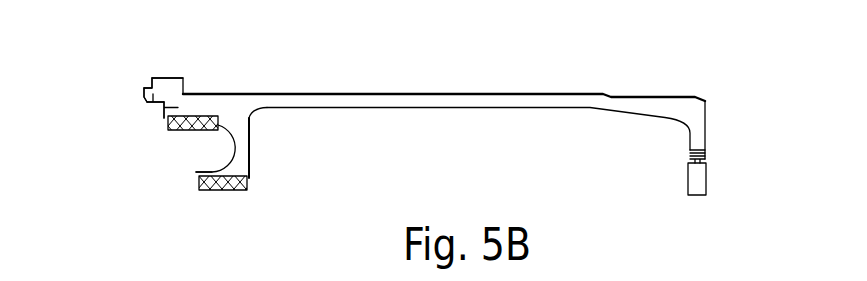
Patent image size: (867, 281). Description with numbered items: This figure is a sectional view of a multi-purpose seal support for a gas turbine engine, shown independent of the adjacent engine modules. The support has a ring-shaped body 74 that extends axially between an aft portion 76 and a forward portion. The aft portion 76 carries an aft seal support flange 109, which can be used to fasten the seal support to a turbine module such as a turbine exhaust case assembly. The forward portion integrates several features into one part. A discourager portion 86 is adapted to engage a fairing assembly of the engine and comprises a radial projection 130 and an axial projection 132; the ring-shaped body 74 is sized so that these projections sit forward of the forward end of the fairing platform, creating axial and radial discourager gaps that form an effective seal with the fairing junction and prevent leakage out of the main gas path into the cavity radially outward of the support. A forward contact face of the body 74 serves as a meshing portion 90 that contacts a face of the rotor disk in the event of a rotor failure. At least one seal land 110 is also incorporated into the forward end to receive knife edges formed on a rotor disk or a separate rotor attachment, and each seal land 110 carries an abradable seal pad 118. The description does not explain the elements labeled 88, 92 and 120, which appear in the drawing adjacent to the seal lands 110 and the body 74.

The ring-shaped body 74 is at (465, 93).
The aft portion 76 is at (740, 86).
The discourager portion 86 is at (201, 83).
The support member 88 is at (262, 120).
The meshing portion 90 is at (134, 77).
The lower lip 92 is at (130, 96).
The aft seal support flange 109 is at (697, 133).
The seal land 110 is at (163, 108).
The abradable seal pad 118 is at (203, 132).
The curved connector 120 is at (223, 147).
The radial projection 130 is at (152, 104).
The axial projection 132 is at (168, 88).